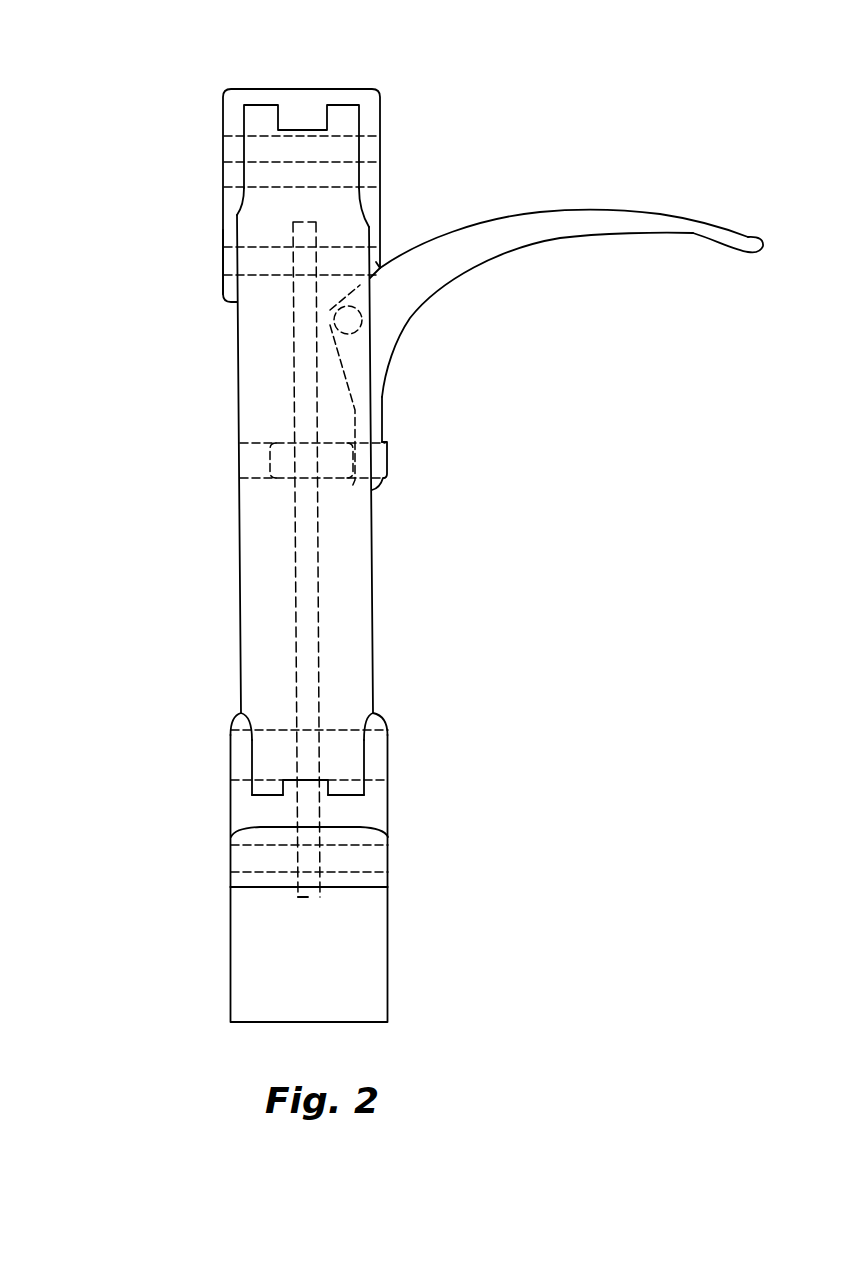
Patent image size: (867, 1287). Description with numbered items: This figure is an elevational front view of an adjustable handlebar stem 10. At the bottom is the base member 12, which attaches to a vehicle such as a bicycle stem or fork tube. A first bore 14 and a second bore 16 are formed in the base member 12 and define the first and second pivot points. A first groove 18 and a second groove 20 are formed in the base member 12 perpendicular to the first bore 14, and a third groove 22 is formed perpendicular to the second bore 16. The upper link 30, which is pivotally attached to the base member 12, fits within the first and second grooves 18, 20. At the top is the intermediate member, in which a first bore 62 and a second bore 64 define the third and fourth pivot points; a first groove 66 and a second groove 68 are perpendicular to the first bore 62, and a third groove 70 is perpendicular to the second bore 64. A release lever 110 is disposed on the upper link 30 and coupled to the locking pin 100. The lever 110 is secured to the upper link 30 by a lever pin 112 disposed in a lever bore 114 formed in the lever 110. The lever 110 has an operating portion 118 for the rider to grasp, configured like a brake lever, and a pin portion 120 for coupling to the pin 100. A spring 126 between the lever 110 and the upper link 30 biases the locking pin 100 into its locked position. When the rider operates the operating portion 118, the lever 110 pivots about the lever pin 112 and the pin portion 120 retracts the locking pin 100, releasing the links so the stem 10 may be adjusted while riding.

The adjustable handlebar stem 10 is at (122, 552).
The base member 12 is at (367, 930).
The first bore 14 is at (388, 752).
The second bore 16 is at (388, 857).
The first groove 18 is at (260, 795).
The second groove 20 is at (347, 797).
The third groove 22 is at (305, 898).
The upper link 30 is at (255, 378).
The first bore 62 is at (383, 145).
The second bore 64 is at (221, 257).
The first groove 66 is at (258, 105).
The second groove 68 is at (342, 103).
The third groove 70 is at (298, 222).
The locking pin 100 is at (387, 470).
The release lever 110 is at (546, 334).
The lever pin 112 is at (357, 323).
The lever bore 114 is at (370, 303).
The operating portion 118 is at (598, 225).
The pin portion 120 is at (382, 410).
The spring 126 is at (378, 258).